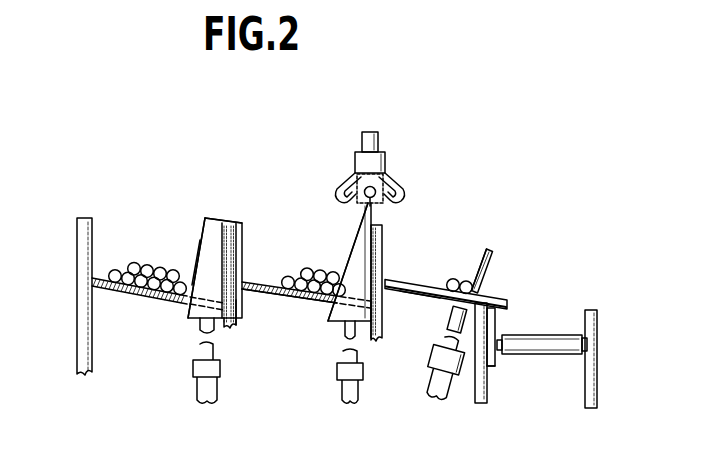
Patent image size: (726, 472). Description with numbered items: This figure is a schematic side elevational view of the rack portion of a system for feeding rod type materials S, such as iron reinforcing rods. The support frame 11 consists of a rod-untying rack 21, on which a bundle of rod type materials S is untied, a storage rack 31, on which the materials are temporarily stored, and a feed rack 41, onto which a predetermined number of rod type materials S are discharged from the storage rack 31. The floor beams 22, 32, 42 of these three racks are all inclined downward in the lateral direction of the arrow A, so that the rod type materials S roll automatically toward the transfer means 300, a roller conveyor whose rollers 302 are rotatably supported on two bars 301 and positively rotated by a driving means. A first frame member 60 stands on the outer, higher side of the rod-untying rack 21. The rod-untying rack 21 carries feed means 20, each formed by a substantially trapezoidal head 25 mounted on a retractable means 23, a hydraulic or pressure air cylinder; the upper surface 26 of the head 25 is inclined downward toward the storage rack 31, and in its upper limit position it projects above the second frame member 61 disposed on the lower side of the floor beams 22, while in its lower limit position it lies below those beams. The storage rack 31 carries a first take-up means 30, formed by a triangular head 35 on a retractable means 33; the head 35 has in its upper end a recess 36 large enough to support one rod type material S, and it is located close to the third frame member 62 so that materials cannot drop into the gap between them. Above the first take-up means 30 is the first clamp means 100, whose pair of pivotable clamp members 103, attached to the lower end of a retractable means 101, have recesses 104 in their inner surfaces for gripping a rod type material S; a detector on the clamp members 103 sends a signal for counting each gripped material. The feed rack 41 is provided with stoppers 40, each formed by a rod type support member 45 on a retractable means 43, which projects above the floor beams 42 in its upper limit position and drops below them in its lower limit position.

The support frame 11 is at (311, 319).
The feed means 20 is at (205, 205).
The rod-untying rack 21 is at (148, 231).
The floor beams 22 is at (140, 302).
The retractable means 23 is at (200, 385).
The head 25 is at (150, 240).
The upper surface 26 is at (213, 216).
The first take-up means 30 is at (356, 220).
The storage rack 31 is at (259, 236).
The floor beams 32 is at (282, 300).
The retractable means 33 is at (342, 385).
The head 35 is at (343, 280).
The recess 36 is at (392, 224).
The stoppers 40 is at (483, 287).
The feed rack 41 is at (457, 253).
The floor beams 42 is at (410, 292).
The retractable means 43 is at (449, 388).
The support member 45 is at (492, 263).
The first frame member 60 is at (75, 343).
The second frame member 61 is at (240, 326).
The third frame member 62 is at (385, 342).
The first clamp means 100 is at (362, 133).
The retractable means 101 is at (386, 143).
The clamp members 103 is at (388, 182).
The recesses 104 is at (341, 196).
The transfer means 300 is at (554, 331).
The bars 301 is at (489, 368).
The rollers 302 is at (543, 355).
The rod type materials S is at (115, 283).
The arrow A is at (210, 102).